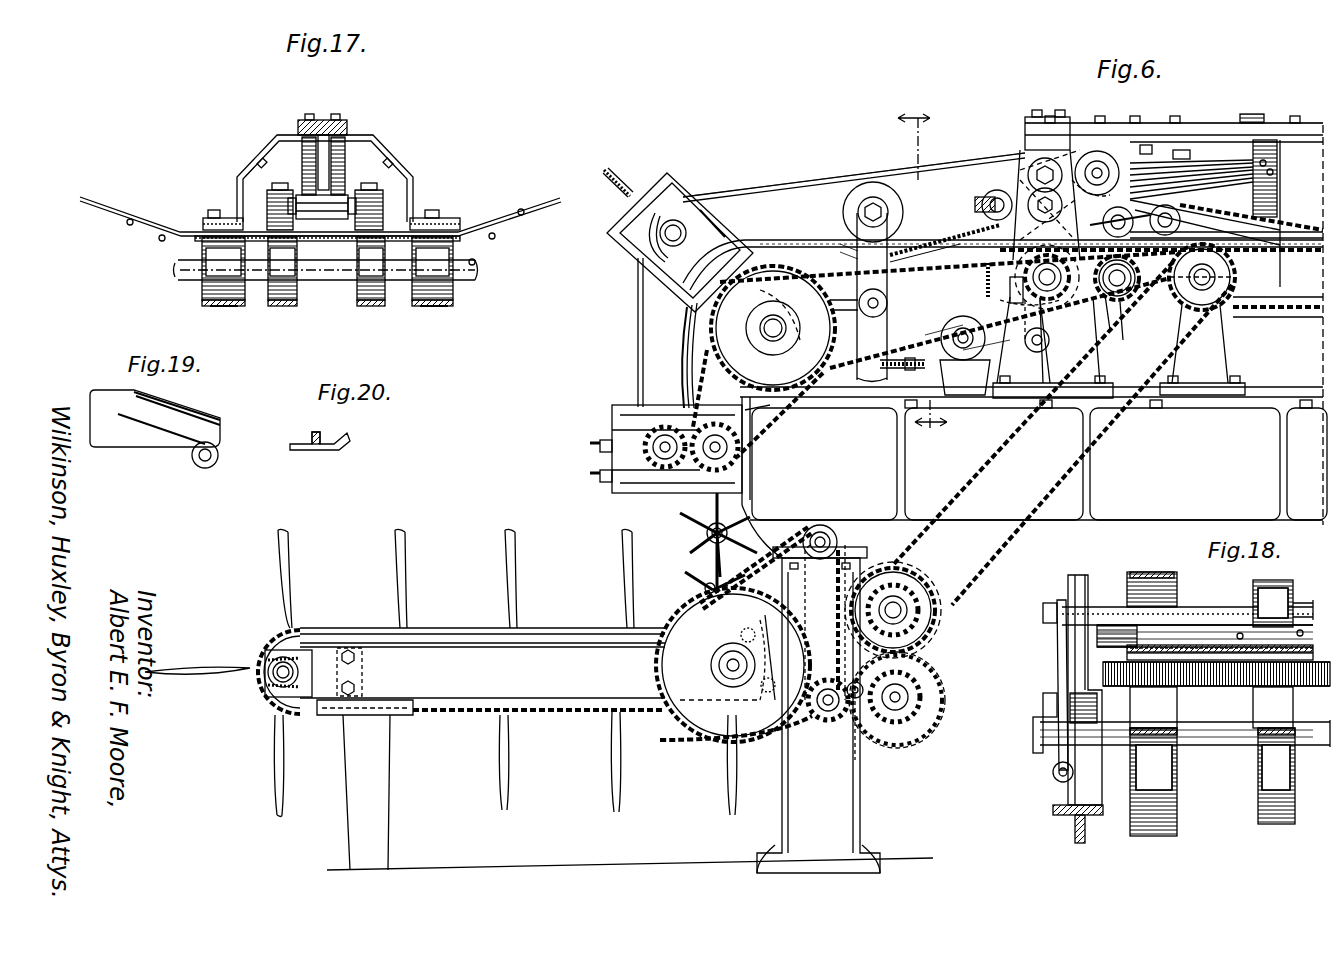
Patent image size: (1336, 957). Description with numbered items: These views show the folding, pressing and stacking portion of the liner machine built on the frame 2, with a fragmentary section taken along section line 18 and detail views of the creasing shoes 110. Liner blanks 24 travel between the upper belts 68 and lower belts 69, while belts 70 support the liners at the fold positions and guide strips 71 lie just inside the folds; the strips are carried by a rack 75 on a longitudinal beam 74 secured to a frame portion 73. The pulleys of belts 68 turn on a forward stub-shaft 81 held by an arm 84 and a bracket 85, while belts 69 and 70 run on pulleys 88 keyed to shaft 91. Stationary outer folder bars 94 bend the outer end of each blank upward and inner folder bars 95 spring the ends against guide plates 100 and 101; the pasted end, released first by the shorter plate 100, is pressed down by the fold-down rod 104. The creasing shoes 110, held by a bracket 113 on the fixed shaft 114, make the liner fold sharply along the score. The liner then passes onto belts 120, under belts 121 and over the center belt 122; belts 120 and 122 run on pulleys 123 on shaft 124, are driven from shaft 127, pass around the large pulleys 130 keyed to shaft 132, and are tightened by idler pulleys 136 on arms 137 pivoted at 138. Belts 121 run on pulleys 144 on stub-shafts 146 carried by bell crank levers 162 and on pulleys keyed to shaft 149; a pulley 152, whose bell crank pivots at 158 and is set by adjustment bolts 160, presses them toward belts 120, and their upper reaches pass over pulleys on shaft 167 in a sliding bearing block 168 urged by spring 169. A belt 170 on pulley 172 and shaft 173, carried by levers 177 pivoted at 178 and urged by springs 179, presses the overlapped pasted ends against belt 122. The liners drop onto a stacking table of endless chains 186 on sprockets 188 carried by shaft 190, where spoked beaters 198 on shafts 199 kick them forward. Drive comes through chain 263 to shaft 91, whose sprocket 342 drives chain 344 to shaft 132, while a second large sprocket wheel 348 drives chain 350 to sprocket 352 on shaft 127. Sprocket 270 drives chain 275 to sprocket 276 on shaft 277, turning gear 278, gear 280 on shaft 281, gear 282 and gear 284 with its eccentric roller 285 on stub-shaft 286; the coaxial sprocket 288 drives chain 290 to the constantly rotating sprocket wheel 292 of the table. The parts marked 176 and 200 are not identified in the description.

In FIG. 18, the frame 2 is at (1074, 828).
In FIG. 6, the frame 2 is at (1075, 521).
In FIG. 6, the section line 18 is at (922, 272).
In FIG. 17, the liner blanks 24 is at (400, 285).
In FIG. 18, the liner blanks 24 is at (1216, 684).
In FIG. 17, the upper belts 68 is at (280, 192).
In FIG. 17, the lower belts 69 is at (355, 240).
In FIG. 17, the belts 70 is at (225, 308).
In FIG. 17, the guide strips 71 is at (200, 220).
In FIG. 6, the frame portion 73 is at (1043, 117).
In FIG. 17, the longitudinal beam 74 is at (348, 127).
In FIG. 6, the longitudinal beam 74 is at (1226, 132).
In FIG. 17, the rack 75 is at (398, 160).
In FIG. 6, the rack 75 is at (1268, 150).
In FIG. 6, the forward stub-shaft 81 is at (1140, 145).
In FIG. 17, the arm 84 is at (302, 195).
In FIG. 6, the arm 84 is at (1160, 160).
In FIG. 17, the bracket 85 is at (346, 150).
In FIG. 6, the bracket 85 is at (1175, 160).
In FIG. 17, the pulleys 88 is at (327, 268).
In FIG. 17, the shaft 91 is at (476, 266).
In FIG. 6, the shaft 91 is at (1120, 302).
In FIG. 17, the outer folder bars 94 is at (130, 226).
In FIG. 6, the outer folder bars 94 is at (1235, 240).
In FIG. 17, the inner folder bars 95 is at (162, 242).
In FIG. 6, the inner folder bars 95 is at (1240, 255).
In FIG. 17, the guide plate 100 is at (385, 145).
In FIG. 17, the guide plate 101 is at (268, 165).
In FIG. 6, the fold-down rod 104 is at (930, 240).
In FIG. 19, the creasing shoes 110 is at (220, 440).
In FIG. 20, the creasing shoes 110 is at (351, 444).
In FIG. 6, the creasing shoes 110 is at (1175, 198).
In FIG. 6, the bracket 113 is at (1202, 350).
In FIG. 6, the fixed shaft 114 is at (1235, 266).
In FIG. 18, the belts 120 is at (1176, 716).
In FIG. 6, the belts 120 is at (935, 335).
In FIG. 18, the belts 121 is at (1205, 609).
In FIG. 18, the belt 122 is at (1270, 783).
In FIG. 6, the pulleys 123 is at (1060, 325).
In FIG. 6, the shaft 124 is at (1036, 352).
In FIG. 6, the shaft 127 is at (708, 468).
In FIG. 18, the pulleys 130 is at (1258, 752).
In FIG. 6, the pulleys 130 is at (785, 250).
In FIG. 18, the shaft 132 is at (1305, 722).
In FIG. 6, the shaft 132 is at (776, 340).
In FIG. 6, the idler pulleys 136 is at (965, 377).
In FIG. 6, the arms 137 is at (1028, 350).
In FIG. 6, the pivot 138 is at (1052, 400).
In FIG. 6, the pulleys 144 is at (1097, 150).
In FIG. 6, the stub-shafts 146 is at (1080, 180).
In FIG. 6, the shaft 149 is at (660, 465).
In FIG. 6, the pulley 152 is at (1030, 170).
In FIG. 6, the pivot points 158 is at (1055, 218).
In FIG. 6, the adjustment bolts 160 is at (995, 190).
In FIG. 6, the bell crank levers 162 is at (1072, 160).
In FIG. 6, the shaft 167 is at (676, 228).
In FIG. 6, the sliding bearing block 168 is at (715, 222).
In FIG. 6, the spring 169 is at (628, 175).
In FIG. 18, the belt 170 is at (1268, 588).
In FIG. 6, the belt 170 is at (783, 190).
In FIG. 18, the pulley 172 is at (1290, 590).
In FIG. 6, the pulley 172 is at (870, 182).
In FIG. 18, the shaft 173 is at (1213, 607).
In FIG. 18, the bearing 176 is at (1098, 705).
In FIG. 18, the levers 177 is at (1060, 672).
In FIG. 6, the levers 177 is at (857, 236).
In FIG. 6, the pivot 178 is at (857, 303).
In FIG. 6, the springs 179 is at (902, 373).
In FIG. 6, the endless chains 186 is at (466, 712).
In FIG. 6, the sprockets 188 is at (270, 705).
In FIG. 6, the shaft 190 is at (278, 657).
In FIG. 6, the spoked beaters 198 is at (705, 527).
In FIG. 6, the shafts 199 is at (700, 545).
In FIG. 6, the nut 200 is at (703, 588).
In FIG. 6, the chain 263 is at (1125, 298).
In FIG. 6, the sprocket 270 is at (1232, 277).
In FIG. 6, the chain 275 is at (1120, 440).
In FIG. 6, the sprocket 276 is at (925, 625).
In FIG. 6, the shaft 277 is at (900, 610).
In FIG. 6, the gear 278 is at (920, 565).
In FIG. 6, the gear 280 is at (942, 702).
In FIG. 6, the shaft 281 is at (910, 693).
In FIG. 6, the gear 282 is at (920, 720).
In FIG. 6, the gear 284 is at (828, 722).
In FIG. 6, the eccentric roller 285 is at (875, 712).
In FIG. 6, the stub-shaft 286 is at (820, 720).
In FIG. 6, the sprocket 288 is at (818, 712).
In FIG. 6, the chain 290 is at (757, 710).
In FIG. 6, the sprocket wheel 292 is at (690, 720).
In FIG. 6, the sprocket 342 is at (1120, 302).
In FIG. 6, the chain 344 is at (1015, 265).
In FIG. 6, the second large sprocket wheel 348 is at (700, 335).
In FIG. 6, the chain 350 is at (685, 383).
In FIG. 6, the sprocket 352 is at (752, 444).